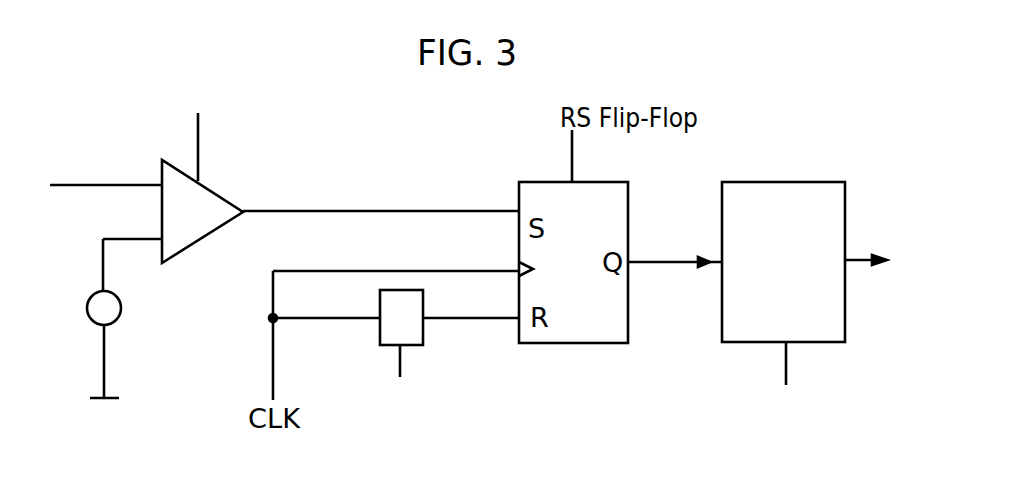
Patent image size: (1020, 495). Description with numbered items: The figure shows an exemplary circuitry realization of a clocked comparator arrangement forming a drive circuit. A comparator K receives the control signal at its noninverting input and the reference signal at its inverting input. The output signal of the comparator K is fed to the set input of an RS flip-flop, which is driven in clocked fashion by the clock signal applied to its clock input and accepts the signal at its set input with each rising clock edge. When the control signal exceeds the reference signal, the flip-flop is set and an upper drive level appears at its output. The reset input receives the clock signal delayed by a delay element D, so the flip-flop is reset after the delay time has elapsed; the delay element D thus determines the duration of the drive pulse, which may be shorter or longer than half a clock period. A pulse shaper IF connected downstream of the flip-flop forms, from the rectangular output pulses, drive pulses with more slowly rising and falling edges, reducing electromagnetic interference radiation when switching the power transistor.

The comparator K is at (150, 239).
The delay element D is at (396, 363).
The pulse shaper IF is at (804, 315).